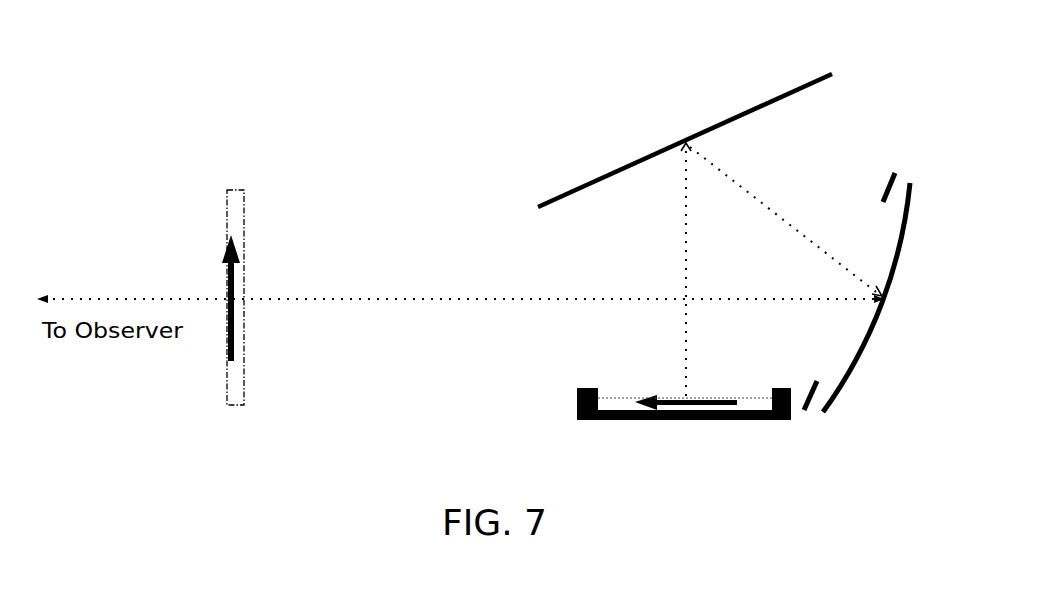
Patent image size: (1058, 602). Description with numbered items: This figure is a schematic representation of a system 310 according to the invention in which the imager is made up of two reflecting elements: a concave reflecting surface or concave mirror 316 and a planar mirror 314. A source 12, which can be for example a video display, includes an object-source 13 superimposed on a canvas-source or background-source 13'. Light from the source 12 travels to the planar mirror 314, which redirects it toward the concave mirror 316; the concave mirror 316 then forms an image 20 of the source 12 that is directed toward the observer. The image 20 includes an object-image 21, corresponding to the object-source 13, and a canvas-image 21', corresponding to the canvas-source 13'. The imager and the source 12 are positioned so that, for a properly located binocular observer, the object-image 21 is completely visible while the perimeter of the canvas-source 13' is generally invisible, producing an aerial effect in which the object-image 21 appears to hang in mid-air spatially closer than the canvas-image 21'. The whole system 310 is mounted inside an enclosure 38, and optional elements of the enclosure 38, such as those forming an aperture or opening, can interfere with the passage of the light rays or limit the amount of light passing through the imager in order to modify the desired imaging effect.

The system 310 is at (422, 100).
The image 20 is at (235, 271).
The object-image 21 is at (208, 309).
The canvas-image 21' is at (211, 237).
The planar mirror 314 is at (685, 140).
The concave reflecting surface 316 is at (880, 297).
The enclosure 38 is at (868, 188).
The source 12 is at (652, 388).
The object-source 13 is at (686, 389).
The canvas-source 13' is at (685, 383).